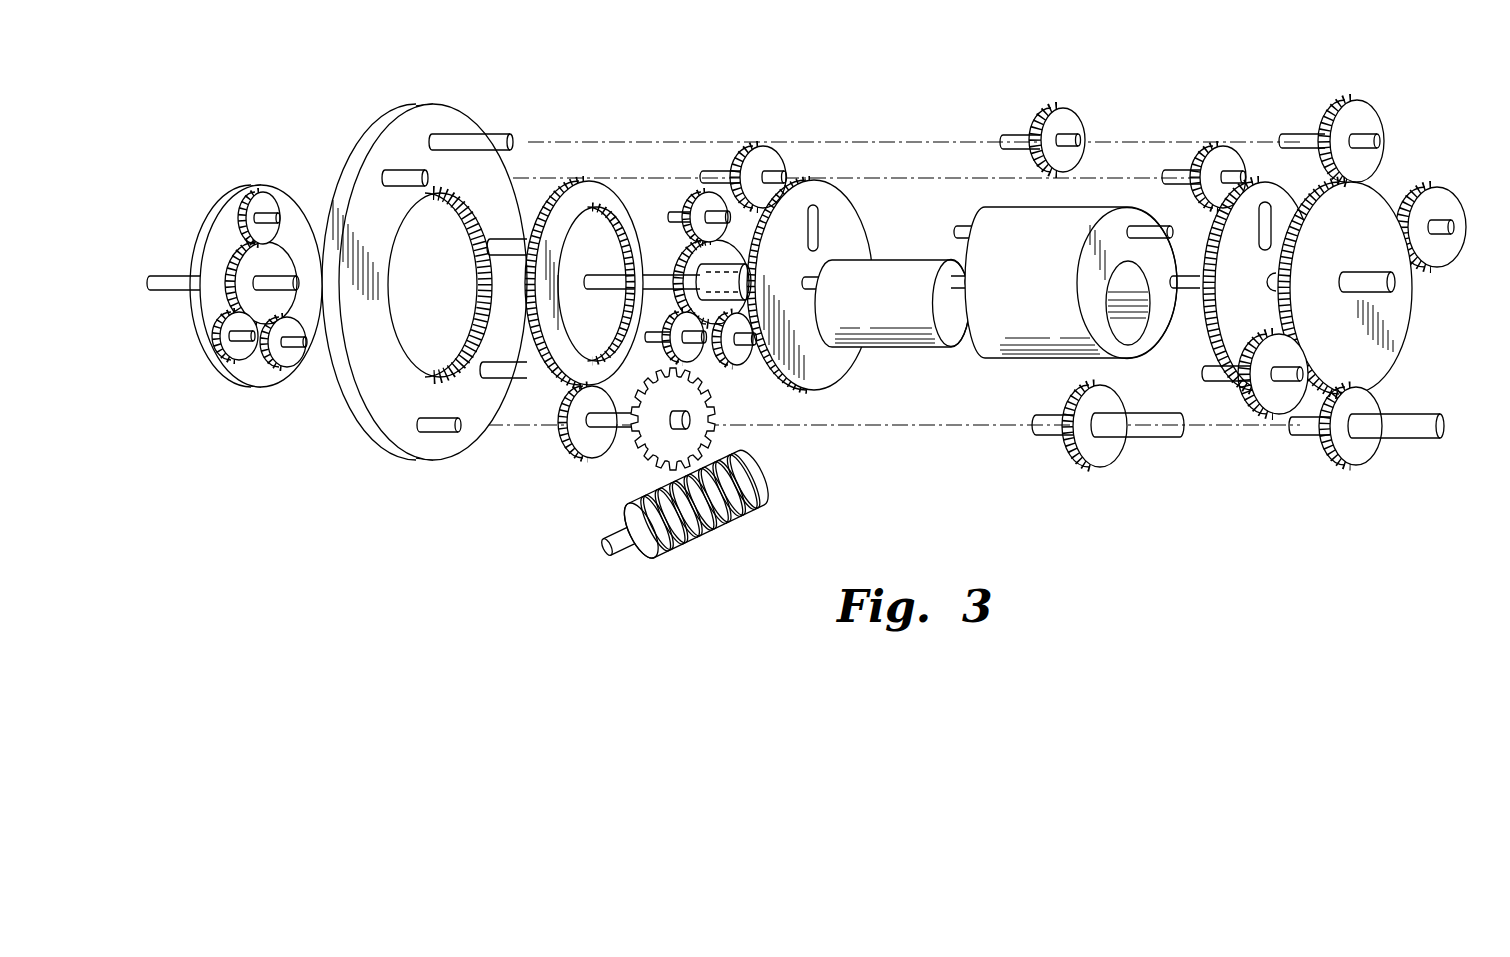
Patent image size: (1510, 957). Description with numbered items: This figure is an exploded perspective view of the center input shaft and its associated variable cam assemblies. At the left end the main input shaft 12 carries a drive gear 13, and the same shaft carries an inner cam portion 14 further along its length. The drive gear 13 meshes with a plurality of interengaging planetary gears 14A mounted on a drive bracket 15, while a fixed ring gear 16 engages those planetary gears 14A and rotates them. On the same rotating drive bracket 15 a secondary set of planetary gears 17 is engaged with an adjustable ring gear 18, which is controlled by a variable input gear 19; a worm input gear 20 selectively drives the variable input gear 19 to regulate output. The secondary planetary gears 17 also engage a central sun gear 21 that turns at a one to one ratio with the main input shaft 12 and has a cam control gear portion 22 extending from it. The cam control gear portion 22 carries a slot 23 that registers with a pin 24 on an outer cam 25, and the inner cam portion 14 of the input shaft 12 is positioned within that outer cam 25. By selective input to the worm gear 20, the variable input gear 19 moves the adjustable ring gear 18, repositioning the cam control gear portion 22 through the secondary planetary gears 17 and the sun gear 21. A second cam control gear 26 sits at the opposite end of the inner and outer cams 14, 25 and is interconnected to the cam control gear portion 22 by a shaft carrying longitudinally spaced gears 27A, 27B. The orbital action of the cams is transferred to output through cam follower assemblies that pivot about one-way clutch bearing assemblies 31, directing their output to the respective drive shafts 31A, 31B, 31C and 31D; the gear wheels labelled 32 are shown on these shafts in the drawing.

The main input shaft 12 is at (168, 293).
The drive gear 13 is at (252, 300).
The inner cam portion 14 is at (897, 337).
The planetary gears 14A is at (263, 202).
The drive bracket 15 is at (222, 232).
The fixed ring gear 16 is at (440, 122).
The secondary set of planetary gears 17 is at (702, 207).
The adjustable ring gear 18 is at (591, 193).
The variable input gear 19 is at (590, 432).
The worm input gear 20 is at (717, 528).
The central sun gear 21 is at (693, 262).
The cam control gear portion 22 is at (847, 218).
The slot 23 is at (818, 217).
The pin 24 is at (958, 232).
The outer cam 25 is at (1035, 350).
The second cam control gear 26 is at (1272, 187).
The longitudinally spaced gear 27A is at (760, 153).
The longitudinally spaced gear 27B is at (1217, 160).
The one-way clutch bearing assembly 31 is at (1067, 105).
The drive shaft 31A is at (1363, 137).
The drive shaft 31B is at (1440, 218).
The drive shaft 31C is at (1287, 378).
The drive shaft 31D is at (1403, 440).
The gear wheel 32 is at (1363, 163).